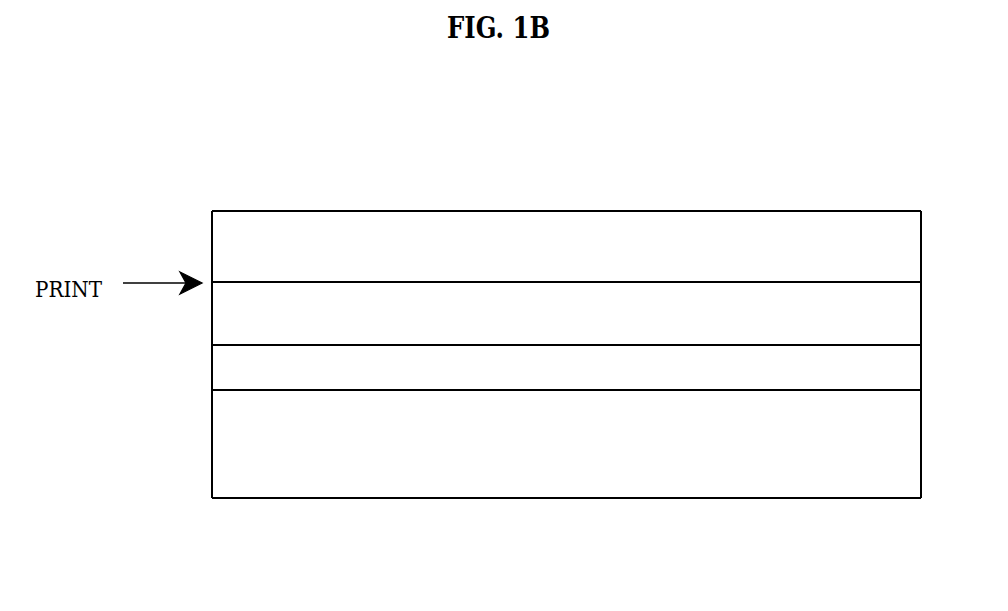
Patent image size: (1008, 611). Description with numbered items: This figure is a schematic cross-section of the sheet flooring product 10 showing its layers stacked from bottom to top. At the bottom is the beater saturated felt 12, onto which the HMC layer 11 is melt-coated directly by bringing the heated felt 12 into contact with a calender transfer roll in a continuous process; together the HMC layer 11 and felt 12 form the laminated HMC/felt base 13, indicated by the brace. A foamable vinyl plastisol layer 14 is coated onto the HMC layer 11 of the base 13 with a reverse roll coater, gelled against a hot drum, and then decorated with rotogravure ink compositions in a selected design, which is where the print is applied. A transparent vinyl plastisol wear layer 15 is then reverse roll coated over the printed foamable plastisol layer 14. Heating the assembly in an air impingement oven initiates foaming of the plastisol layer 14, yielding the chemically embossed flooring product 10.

The flooring product 10 is at (318, 160).
The transparent vinyl plastisol wear layer 15 is at (395, 230).
The foamable vinyl plastisol layer 14 is at (248, 318).
The laminated HMC/felt base 13 is at (207, 345).
The HMC layer 11 is at (262, 372).
The beater saturated felt 12 is at (430, 468).